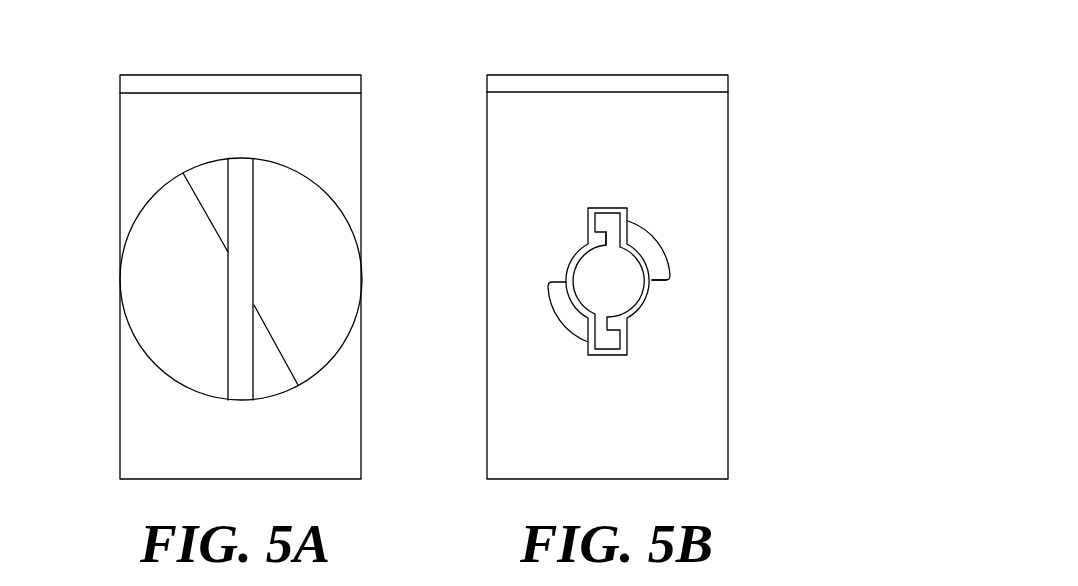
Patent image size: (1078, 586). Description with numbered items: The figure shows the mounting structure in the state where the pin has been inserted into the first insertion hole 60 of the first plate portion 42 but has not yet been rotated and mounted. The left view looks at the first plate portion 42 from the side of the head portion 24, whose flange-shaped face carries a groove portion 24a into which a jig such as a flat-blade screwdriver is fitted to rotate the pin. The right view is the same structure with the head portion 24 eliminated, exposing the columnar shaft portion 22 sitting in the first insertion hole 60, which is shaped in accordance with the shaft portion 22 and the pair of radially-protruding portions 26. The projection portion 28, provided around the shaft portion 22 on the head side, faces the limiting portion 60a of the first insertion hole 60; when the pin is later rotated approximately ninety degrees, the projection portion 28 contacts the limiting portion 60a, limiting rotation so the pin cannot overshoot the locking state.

In FIG. 5B, the shaft portion 22 is at (618, 288).
In FIG. 5A, the head portion 24 is at (157, 235).
In FIG. 5A, the groove portion 24a is at (237, 331).
In FIG. 5B, the radially-protruding portions 26 is at (599, 207).
In FIG. 5B, the projection portion 28 is at (598, 232).
In FIG. 5A, the first plate portion 42 is at (143, 428).
In FIG. 5B, the first plate portion 42 is at (708, 422).
In FIG. 5B, the first insertion hole 60 is at (657, 241).
In FIG. 5B, the limiting portion 60a is at (656, 284).